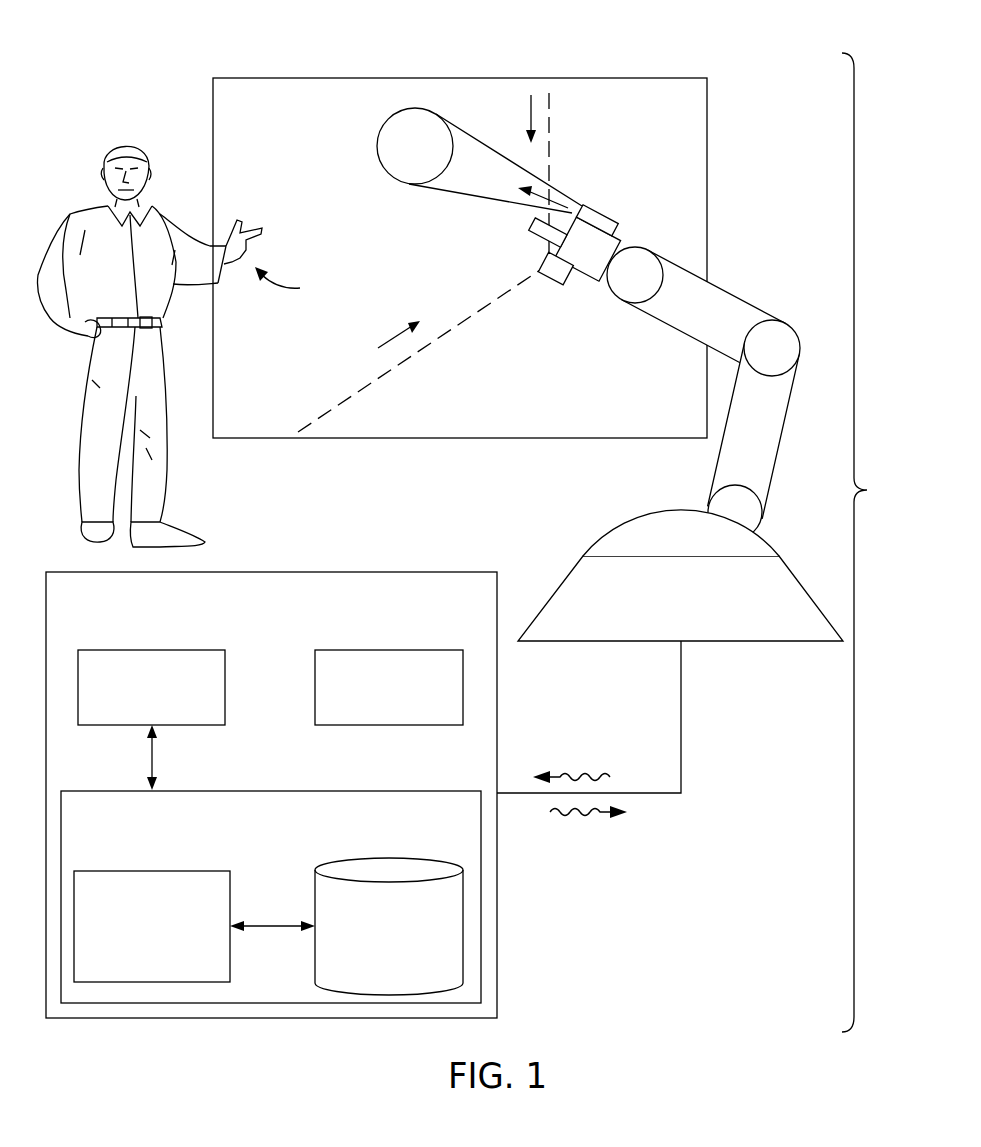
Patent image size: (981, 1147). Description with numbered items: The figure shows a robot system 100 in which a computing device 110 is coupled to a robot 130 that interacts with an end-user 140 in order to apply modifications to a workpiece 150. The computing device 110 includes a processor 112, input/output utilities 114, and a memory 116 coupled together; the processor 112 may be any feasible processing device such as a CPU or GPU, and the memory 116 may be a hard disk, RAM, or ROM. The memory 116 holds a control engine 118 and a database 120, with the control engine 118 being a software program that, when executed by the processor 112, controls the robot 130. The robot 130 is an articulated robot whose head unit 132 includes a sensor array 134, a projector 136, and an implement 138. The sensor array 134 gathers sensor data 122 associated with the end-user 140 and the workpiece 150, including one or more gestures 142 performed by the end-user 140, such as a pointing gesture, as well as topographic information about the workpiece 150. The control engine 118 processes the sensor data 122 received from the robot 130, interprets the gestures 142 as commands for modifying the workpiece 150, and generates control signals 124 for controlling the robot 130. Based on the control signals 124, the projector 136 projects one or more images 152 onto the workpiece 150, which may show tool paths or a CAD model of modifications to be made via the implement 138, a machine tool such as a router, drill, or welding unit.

The robot system 100 is at (876, 542).
The computing device 110 is at (255, 638).
The processor 112 is at (135, 710).
The input/output (I/O) utilities 114 is at (373, 710).
The memory 116 is at (254, 860).
The control engine 118 is at (136, 968).
The database 120 is at (373, 968).
The sensor data 122 is at (578, 772).
The control signals 124 is at (581, 815).
The robot 130 is at (665, 610).
The head unit 132 is at (604, 322).
The sensor array 134 is at (560, 283).
The projector 136 is at (598, 212).
The implement 138 is at (540, 226).
The end-user 140 is at (118, 140).
The gesture 142 is at (294, 284).
The workpiece 150 is at (285, 78).
The images 152 is at (399, 156).